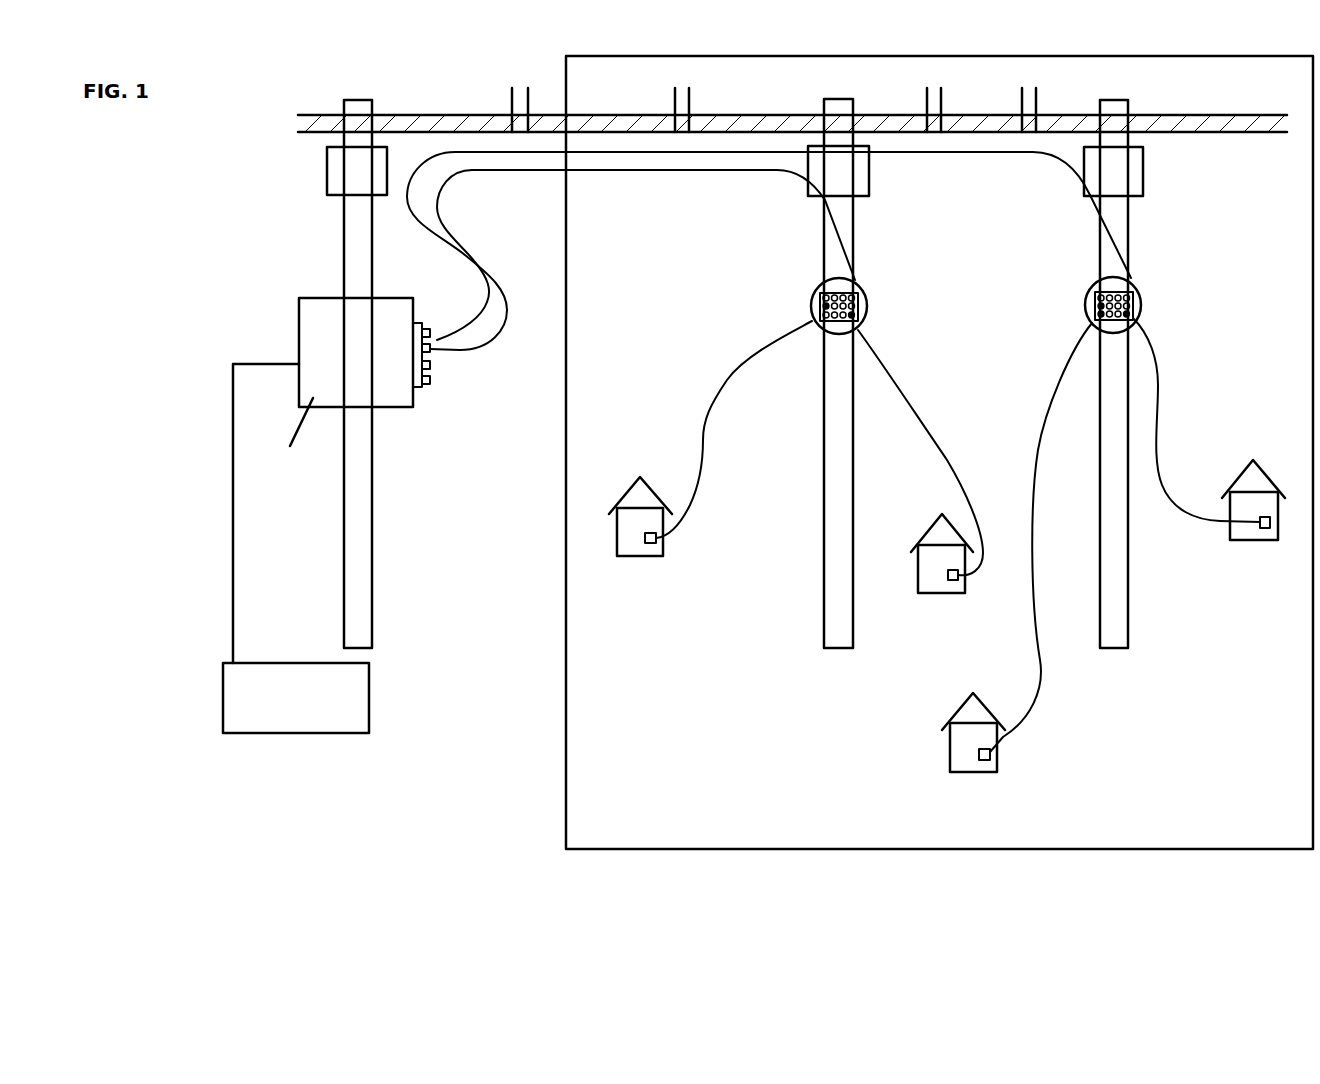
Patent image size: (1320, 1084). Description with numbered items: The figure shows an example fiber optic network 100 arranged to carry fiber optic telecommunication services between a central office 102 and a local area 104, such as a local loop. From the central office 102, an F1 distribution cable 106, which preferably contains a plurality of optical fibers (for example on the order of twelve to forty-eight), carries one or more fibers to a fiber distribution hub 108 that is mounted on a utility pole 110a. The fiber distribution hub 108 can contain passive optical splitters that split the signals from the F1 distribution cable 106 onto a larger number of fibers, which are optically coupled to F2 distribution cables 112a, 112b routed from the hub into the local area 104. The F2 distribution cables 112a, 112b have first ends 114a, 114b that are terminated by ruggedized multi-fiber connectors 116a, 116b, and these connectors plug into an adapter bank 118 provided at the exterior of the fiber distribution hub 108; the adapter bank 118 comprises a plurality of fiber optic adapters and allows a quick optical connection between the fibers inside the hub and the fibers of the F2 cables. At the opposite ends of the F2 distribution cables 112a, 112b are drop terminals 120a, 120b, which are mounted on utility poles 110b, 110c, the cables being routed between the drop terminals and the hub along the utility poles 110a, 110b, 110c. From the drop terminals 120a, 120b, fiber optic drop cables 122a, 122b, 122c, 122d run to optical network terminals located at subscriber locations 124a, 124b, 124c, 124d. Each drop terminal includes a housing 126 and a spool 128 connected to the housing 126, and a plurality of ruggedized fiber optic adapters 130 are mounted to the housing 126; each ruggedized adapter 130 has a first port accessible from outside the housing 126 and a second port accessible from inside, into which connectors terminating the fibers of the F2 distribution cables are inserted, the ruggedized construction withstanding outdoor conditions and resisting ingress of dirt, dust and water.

The fiber optic network 100 is at (445, 84).
The central office 102 is at (370, 697).
The local area 104 is at (700, 55).
The F1 distribution cable 106 is at (233, 617).
The fiber distribution hub 108 is at (387, 408).
The utility pole 110a is at (372, 608).
The utility pole 110b is at (827, 593).
The utility pole 110c is at (1130, 595).
The F2 distribution cable 112a is at (460, 237).
The F2 distribution cable 112b is at (615, 155).
The first end 114a is at (463, 352).
The first end 114b is at (455, 261).
The ruggedized multi-fiber connector 116a is at (433, 345).
The ruggedized multi-fiber connector 116b is at (426, 328).
The adapter bank 118 is at (418, 387).
The drop terminal 120a is at (923, 262).
The drop terminal 120b is at (1158, 269).
The fiber optic drop cable 122a is at (713, 402).
The fiber optic drop cable 122b is at (915, 408).
The fiber optic drop cable 122c is at (1030, 485).
The fiber optic drop cable 122d is at (1162, 405).
The subscriber location 124a is at (623, 557).
The subscriber location 124b is at (923, 593).
The subscriber location 124c is at (953, 773).
The subscriber location 124d is at (1262, 540).
The housing 126 is at (823, 298).
The spool 128 is at (865, 314).
The ruggedized fiber optic adapter 130 is at (825, 306).